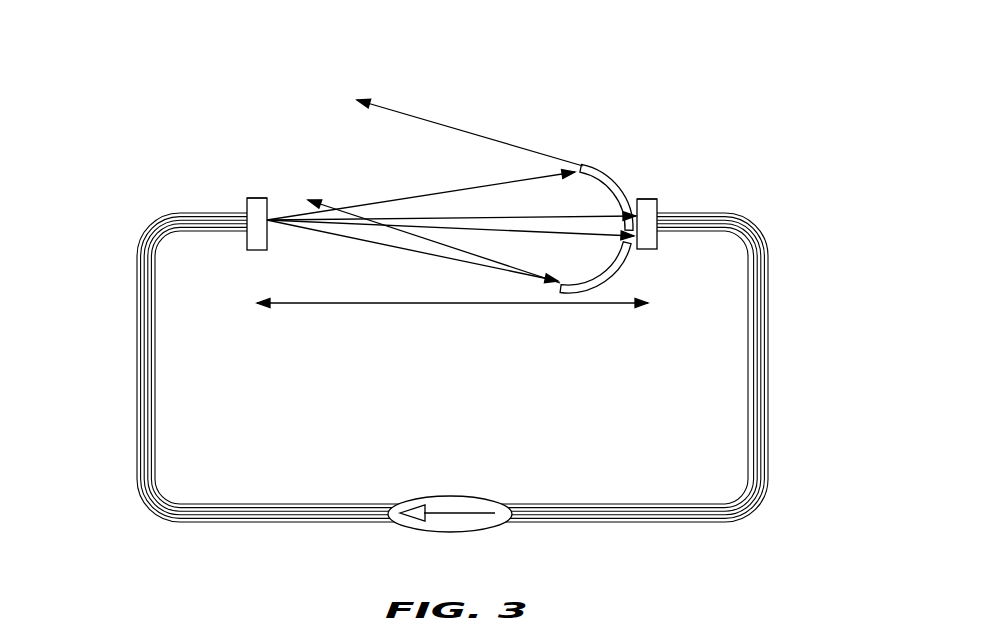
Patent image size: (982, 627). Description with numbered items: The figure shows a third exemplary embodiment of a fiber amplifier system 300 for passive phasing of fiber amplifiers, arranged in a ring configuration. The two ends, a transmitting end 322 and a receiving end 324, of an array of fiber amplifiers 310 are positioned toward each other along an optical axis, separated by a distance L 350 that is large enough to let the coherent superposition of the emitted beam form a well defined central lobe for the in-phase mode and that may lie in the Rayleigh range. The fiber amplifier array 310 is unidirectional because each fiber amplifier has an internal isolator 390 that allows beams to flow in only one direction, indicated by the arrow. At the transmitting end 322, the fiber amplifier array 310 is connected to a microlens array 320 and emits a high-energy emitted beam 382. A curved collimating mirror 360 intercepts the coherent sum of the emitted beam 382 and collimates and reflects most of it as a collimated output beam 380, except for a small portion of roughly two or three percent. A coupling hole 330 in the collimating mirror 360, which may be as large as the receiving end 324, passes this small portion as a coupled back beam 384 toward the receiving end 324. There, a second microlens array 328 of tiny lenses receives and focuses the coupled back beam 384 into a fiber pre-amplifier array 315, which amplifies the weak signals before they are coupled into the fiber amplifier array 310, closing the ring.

The fiber amplifier system 300 is at (547, 47).
The fiber amplifier array 310 is at (277, 363).
The fiber pre-amplifier array 315 is at (790, 530).
The microlens array 320 is at (247, 197).
The transmitting end 322 is at (257, 193).
The receiving end 324 is at (648, 195).
The microlens array 328 is at (658, 199).
The coupling hole 330 is at (631, 250).
The distance L 350 is at (452, 294).
The collimating mirror 360 is at (613, 186).
The output beam 380 is at (392, 104).
The emitted beam 382 is at (494, 184).
The coupled back beam 384 is at (633, 248).
The isolator 390 is at (450, 497).